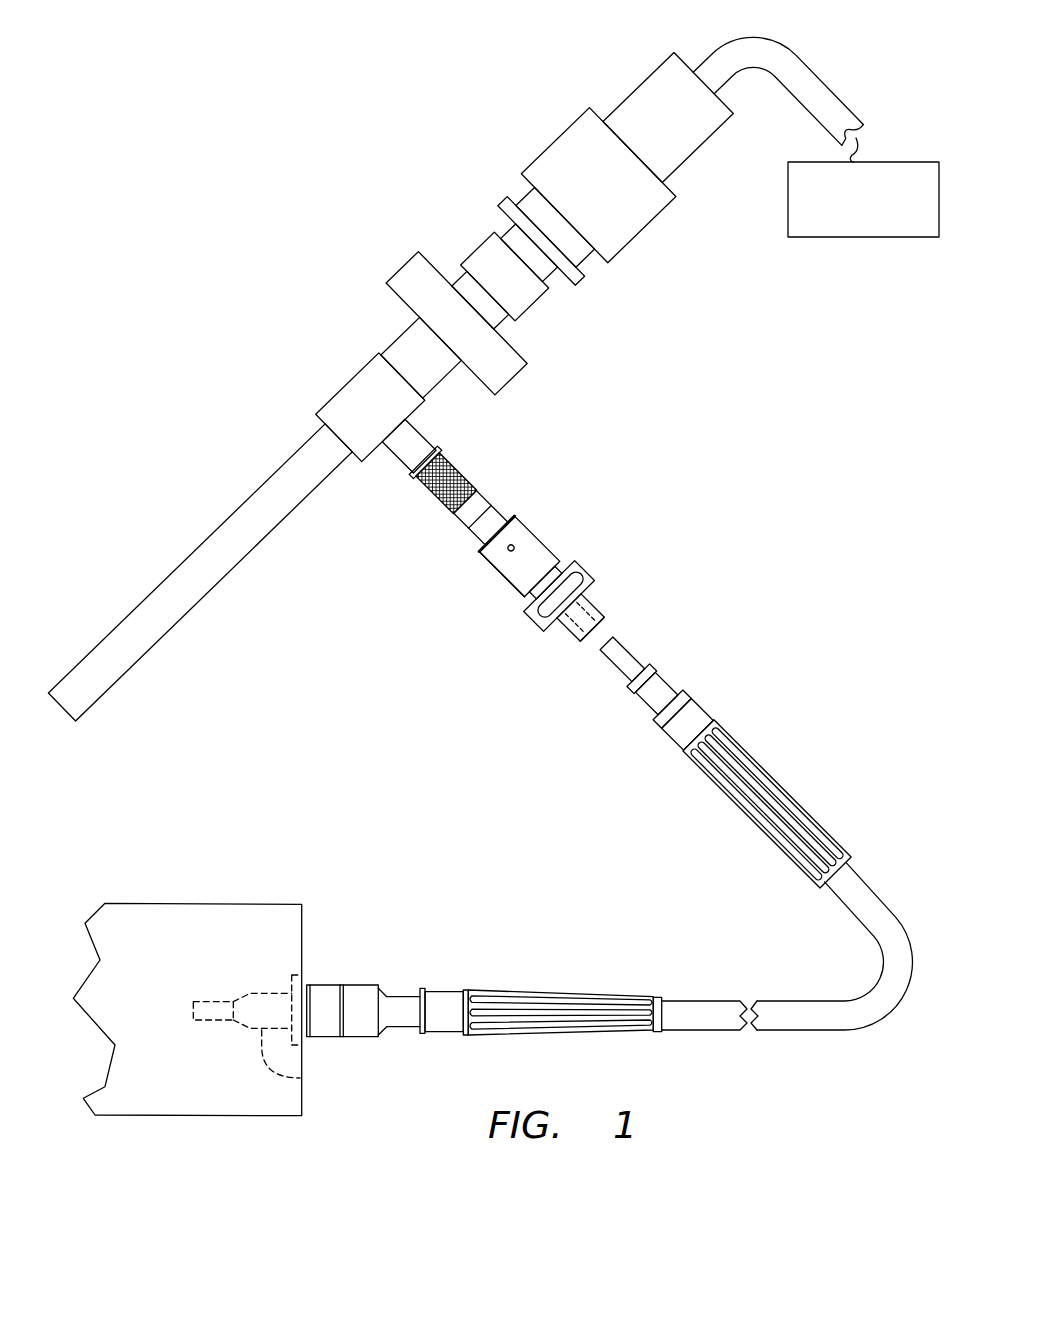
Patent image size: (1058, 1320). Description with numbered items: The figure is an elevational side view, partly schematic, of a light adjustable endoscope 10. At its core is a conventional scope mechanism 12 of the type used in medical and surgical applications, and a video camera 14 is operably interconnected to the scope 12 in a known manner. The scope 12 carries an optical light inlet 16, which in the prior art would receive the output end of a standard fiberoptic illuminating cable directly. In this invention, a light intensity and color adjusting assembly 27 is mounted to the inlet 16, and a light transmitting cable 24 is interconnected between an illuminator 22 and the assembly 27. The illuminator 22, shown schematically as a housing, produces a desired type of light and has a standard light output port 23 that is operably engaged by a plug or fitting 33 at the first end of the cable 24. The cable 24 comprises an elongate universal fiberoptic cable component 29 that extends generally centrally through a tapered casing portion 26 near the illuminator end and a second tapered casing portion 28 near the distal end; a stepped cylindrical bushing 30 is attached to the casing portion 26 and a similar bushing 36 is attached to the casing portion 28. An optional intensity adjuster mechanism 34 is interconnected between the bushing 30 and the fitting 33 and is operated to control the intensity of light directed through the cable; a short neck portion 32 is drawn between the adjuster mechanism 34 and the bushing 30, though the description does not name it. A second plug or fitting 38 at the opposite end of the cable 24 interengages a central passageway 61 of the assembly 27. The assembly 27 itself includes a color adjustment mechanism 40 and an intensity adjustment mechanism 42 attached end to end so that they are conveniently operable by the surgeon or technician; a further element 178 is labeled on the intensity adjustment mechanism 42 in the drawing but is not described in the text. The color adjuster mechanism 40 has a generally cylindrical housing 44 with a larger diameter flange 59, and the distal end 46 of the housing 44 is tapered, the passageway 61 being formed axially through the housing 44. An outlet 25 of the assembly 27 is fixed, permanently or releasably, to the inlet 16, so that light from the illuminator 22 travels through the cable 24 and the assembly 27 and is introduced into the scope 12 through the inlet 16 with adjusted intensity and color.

The light adjustable endoscope 10 is at (293, 207).
The scope mechanism 12 is at (350, 378).
The video camera 14 is at (852, 238).
The optical light inlet 16 is at (476, 491).
The illuminator 22 is at (289, 922).
The light output port 23 is at (297, 977).
The light transmitting cable 24 is at (855, 1035).
The outlet 25 is at (470, 542).
The tapered casing portion 26 is at (542, 990).
The light intensity and color adjusting assembly 27 is at (517, 588).
The second tapered casing portion 28 is at (753, 822).
The fiberoptic cable component 29 is at (773, 1032).
The stepped cylindrical bushing 30 is at (442, 992).
The neck 32 is at (400, 997).
The plug or fitting 33 is at (303, 1080).
The intensity adjuster mechanism 34 is at (342, 985).
The bushing 36 is at (670, 735).
The plug or fitting 38 is at (620, 673).
The color adjustment mechanism 40 is at (533, 623).
The intensity adjustment mechanism 42 is at (482, 571).
The cylindrical housing 44 is at (594, 596).
The distal end 46 is at (572, 647).
The flange 59 is at (585, 567).
The central passageway 61 is at (607, 620).
The adapter body 178 is at (532, 534).